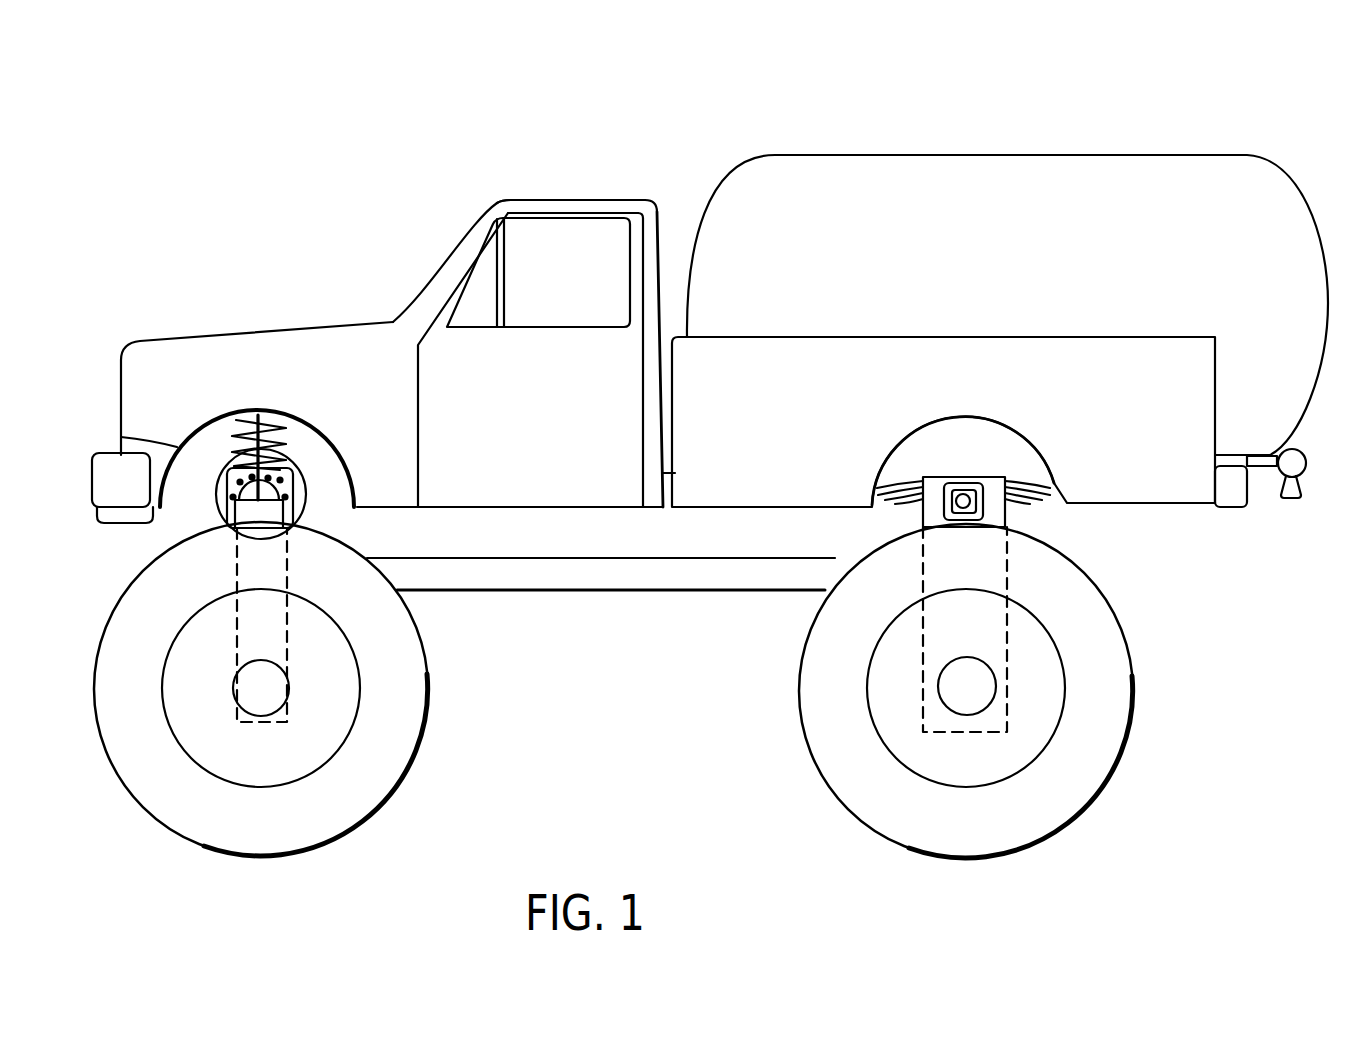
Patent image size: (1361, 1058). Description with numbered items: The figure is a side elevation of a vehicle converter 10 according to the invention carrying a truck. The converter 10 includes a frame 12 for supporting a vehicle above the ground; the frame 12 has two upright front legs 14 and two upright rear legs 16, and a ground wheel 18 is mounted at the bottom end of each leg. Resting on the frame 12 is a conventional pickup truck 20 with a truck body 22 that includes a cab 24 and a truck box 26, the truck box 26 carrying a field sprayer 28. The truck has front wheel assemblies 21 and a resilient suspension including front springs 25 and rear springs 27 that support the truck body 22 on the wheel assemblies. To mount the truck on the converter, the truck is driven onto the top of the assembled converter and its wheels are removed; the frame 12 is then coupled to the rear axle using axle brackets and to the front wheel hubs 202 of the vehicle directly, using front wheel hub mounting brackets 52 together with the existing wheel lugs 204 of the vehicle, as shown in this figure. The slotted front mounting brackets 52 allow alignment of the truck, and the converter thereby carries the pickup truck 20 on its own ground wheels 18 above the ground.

The vehicle converter 10 is at (696, 469).
The frame 12 is at (630, 596).
The upright front legs 14 is at (247, 515).
The upright rear legs 16 is at (1013, 513).
The ground wheel 18 is at (382, 775).
The pickup truck 20 is at (268, 307).
The front wheel assemblies 21 is at (307, 490).
The truck body 22 is at (668, 313).
The cab 24 is at (537, 200).
The front springs 25 is at (226, 466).
The truck box 26 is at (1008, 357).
The rear springs 27 is at (1020, 478).
The field sprayer 28 is at (1070, 157).
The wheel hub mounting brackets 52 is at (122, 437).
The front wheel hubs 202 is at (266, 458).
The wheel lugs 204 is at (293, 472).